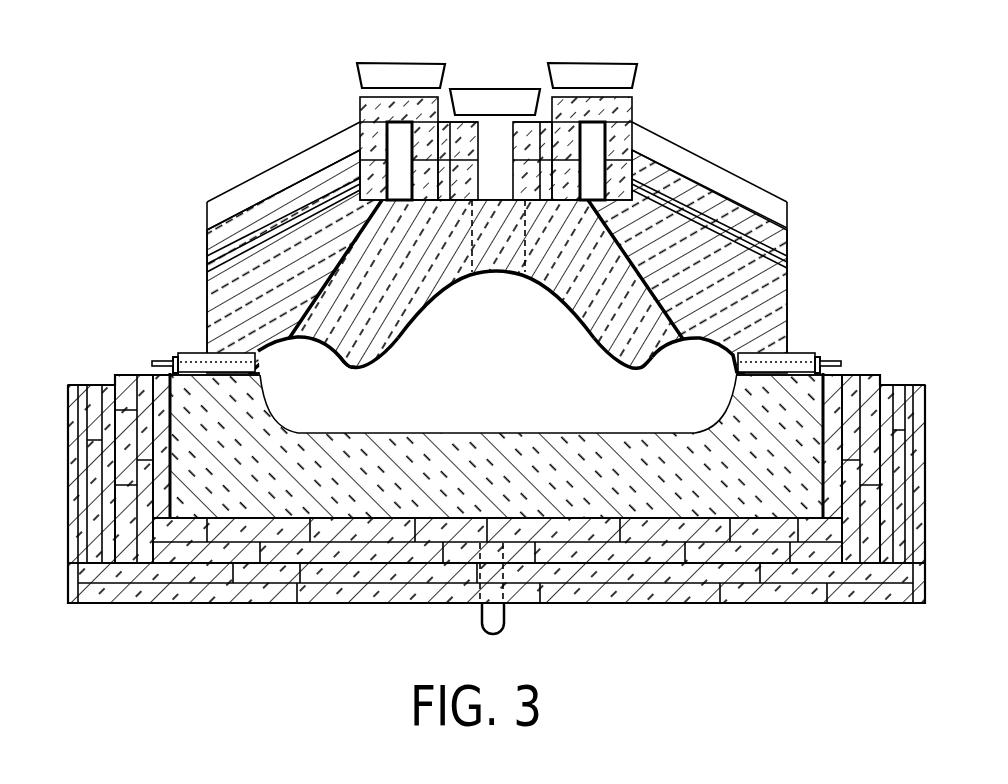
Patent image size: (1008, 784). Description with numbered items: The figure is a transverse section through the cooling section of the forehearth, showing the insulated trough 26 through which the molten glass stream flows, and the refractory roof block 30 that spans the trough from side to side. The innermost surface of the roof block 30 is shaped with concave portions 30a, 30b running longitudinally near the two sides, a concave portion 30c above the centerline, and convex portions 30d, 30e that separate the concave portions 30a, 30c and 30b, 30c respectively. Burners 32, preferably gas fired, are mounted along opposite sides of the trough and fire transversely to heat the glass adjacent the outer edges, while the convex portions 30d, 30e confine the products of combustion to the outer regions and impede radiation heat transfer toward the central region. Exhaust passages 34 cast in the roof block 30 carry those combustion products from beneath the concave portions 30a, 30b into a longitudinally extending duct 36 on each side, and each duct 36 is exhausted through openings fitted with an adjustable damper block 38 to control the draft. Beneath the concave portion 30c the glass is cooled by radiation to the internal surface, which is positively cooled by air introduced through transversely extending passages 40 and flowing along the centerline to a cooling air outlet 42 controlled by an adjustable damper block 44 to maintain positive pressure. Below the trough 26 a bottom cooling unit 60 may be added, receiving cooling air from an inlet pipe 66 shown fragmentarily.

The insulated trough 26 is at (800, 437).
The roof block 30 is at (777, 293).
The concave portion 30a is at (313, 352).
The concave portion 30b is at (686, 350).
The concave portion 30c is at (411, 312).
The convex portion 30d is at (378, 366).
The convex portion 30e is at (608, 366).
The burner 32 is at (192, 356).
The exhaust passage 34 is at (345, 262).
The longitudinally extending duct 36 is at (373, 155).
The adjustable damper block 38 is at (412, 72).
The transversely extending passage 40 is at (205, 283).
The cooling air outlet 42 is at (490, 277).
The adjustable damper block 44 is at (487, 90).
The bottom cooling unit 60 is at (518, 608).
The inlet pipe 66 is at (503, 623).